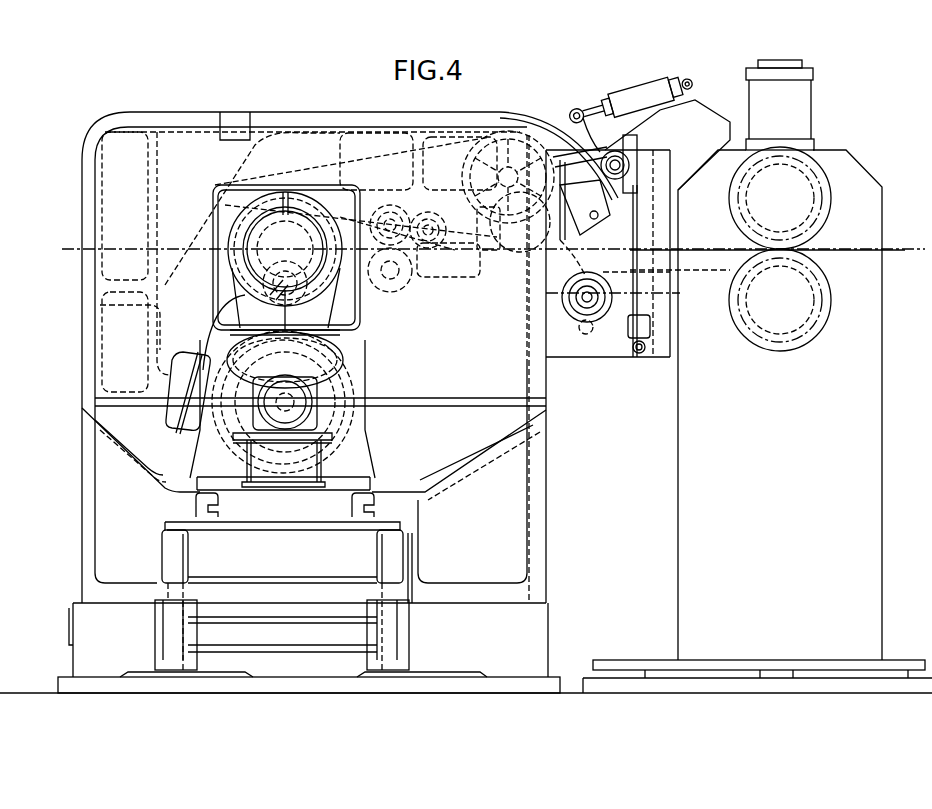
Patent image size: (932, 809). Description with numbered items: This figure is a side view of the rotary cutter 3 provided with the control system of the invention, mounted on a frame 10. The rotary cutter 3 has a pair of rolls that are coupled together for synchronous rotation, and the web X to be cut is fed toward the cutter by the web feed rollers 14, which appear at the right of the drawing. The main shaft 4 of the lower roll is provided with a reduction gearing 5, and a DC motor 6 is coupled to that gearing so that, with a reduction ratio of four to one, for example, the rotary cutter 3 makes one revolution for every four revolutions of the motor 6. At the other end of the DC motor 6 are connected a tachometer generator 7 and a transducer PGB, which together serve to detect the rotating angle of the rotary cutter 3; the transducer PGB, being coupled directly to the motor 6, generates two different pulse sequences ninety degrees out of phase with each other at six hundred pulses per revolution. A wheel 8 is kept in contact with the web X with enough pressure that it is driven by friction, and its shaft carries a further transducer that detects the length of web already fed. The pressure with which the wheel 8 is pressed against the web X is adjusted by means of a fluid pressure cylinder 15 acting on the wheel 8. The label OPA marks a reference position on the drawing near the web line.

The rotary cutter 3 is at (318, 124).
The main shaft 4 is at (255, 242).
The reduction gearing 5 is at (150, 306).
The DC motor 6 is at (215, 373).
The tachometer generator 7 is at (268, 405).
The wheel 8 is at (567, 138).
The frame 10 is at (546, 470).
The web feed rollers 14 is at (825, 278).
The fluid pressure cylinder 15 is at (657, 88).
The web X is at (82, 249).
The operating point A OPA is at (603, 288).
The transducer PGB is at (268, 410).